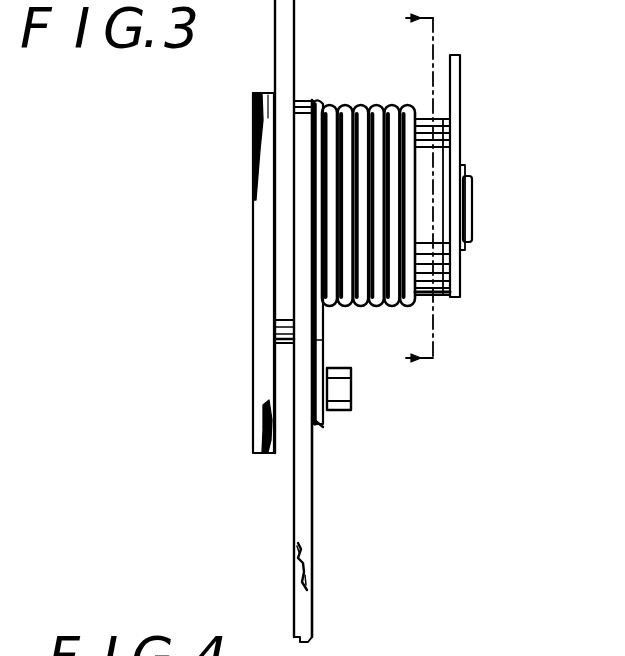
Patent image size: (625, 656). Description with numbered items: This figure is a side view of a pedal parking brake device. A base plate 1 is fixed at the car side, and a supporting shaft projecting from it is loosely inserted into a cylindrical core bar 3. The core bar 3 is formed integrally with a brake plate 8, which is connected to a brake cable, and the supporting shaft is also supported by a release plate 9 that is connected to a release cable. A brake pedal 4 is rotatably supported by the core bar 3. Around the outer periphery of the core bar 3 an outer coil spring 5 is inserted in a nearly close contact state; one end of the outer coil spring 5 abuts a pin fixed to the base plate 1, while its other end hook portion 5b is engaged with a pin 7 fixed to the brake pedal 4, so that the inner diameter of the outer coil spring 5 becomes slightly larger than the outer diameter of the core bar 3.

The base plate 1 is at (253, 320).
The cylindrical core bar 3 is at (443, 295).
The brake pedal 4 is at (332, 567).
The outer coil spring 5 is at (363, 105).
The end hook portion 5b is at (320, 424).
The pin 7 is at (347, 386).
The brake plate 8 is at (275, 8).
The release plate 9 is at (474, 52).